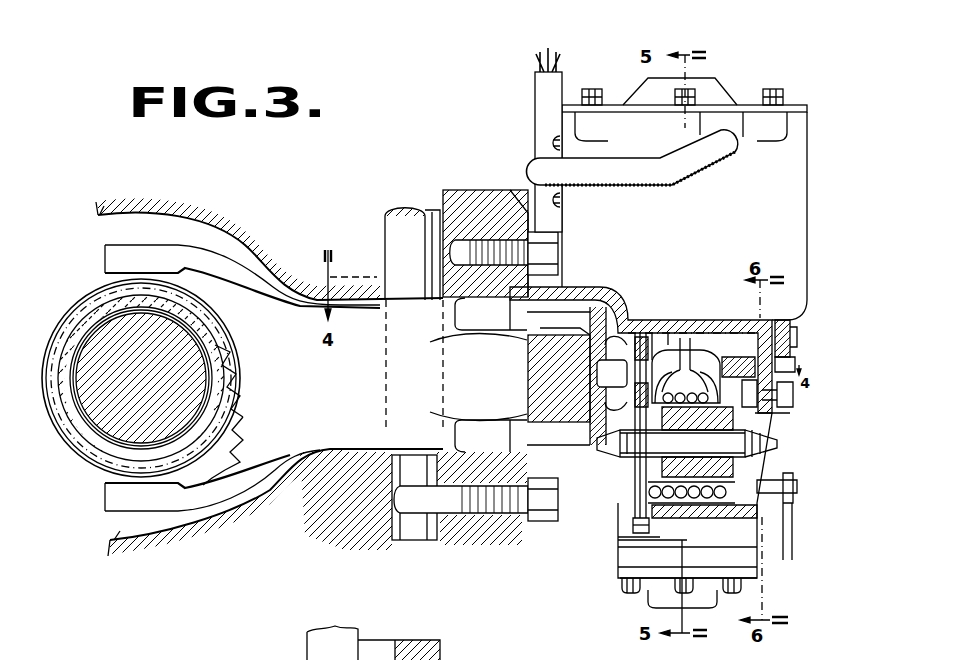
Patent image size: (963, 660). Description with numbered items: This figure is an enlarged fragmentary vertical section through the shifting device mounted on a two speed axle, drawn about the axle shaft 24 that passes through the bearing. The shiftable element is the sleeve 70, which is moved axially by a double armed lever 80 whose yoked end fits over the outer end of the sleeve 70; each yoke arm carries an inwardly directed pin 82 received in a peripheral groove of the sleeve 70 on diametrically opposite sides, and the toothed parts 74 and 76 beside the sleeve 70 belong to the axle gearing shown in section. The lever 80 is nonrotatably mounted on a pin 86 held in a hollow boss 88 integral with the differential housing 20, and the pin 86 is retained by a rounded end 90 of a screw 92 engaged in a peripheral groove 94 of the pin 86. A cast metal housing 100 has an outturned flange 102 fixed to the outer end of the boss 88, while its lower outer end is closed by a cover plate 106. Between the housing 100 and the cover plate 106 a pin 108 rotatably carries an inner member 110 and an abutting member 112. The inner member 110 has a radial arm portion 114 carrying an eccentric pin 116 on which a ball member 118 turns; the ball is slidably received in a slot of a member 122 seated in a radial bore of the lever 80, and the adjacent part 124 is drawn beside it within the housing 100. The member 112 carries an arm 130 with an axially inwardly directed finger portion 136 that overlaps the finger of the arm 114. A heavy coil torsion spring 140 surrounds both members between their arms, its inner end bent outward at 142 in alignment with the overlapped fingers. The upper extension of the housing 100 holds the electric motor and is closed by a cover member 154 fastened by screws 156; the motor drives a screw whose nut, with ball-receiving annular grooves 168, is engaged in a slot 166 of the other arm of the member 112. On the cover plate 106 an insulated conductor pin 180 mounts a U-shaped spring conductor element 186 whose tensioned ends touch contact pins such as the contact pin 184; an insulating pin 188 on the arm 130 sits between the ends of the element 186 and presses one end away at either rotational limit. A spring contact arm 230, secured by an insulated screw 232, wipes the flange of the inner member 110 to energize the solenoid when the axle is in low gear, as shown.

The differential housing 20 is at (116, 541).
The shaft 24 is at (192, 384).
The sleeve 70 is at (214, 408).
The gear 74 is at (208, 421).
The gear portion 76 is at (228, 426).
The double armed lever 80 is at (338, 392).
The pin 82 is at (112, 276).
The pin 86 is at (398, 258).
The hollow boss 88 is at (480, 212).
The rounded end 90 is at (447, 522).
The screw 92 is at (494, 526).
The peripheral groove 94 is at (374, 520).
The housing 100 is at (606, 288).
The outturned flange 102 is at (507, 215).
The cover plate 106 is at (782, 410).
The pin 108 is at (642, 463).
The inner member 110 is at (671, 443).
The member 112 is at (743, 443).
The arm portion 114 is at (662, 350).
The pin 116 is at (612, 373).
The ball member 118 is at (630, 343).
The member 122 is at (562, 424).
The contact carrier 124 is at (657, 365).
The arm 130 is at (738, 360).
The finger portion 136 is at (690, 345).
The coil torsion spring 140 is at (655, 508).
The spring end 142 is at (700, 360).
The cover member 154 is at (735, 104).
The screws 156 is at (585, 92).
The slot 166 is at (650, 604).
The annular grooves 168 is at (625, 590).
The conductor pin 180 is at (770, 518).
The contact pin 184 is at (785, 364).
The spring conductor element 186 is at (715, 505).
The pin 188 is at (780, 334).
The spring contact arm 230 is at (636, 492).
The screw 232 is at (640, 539).